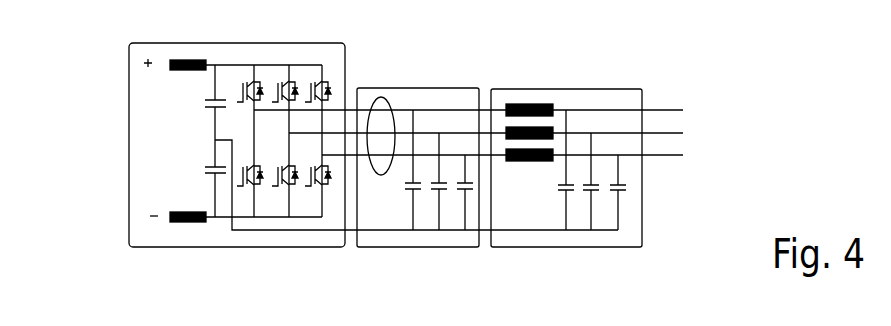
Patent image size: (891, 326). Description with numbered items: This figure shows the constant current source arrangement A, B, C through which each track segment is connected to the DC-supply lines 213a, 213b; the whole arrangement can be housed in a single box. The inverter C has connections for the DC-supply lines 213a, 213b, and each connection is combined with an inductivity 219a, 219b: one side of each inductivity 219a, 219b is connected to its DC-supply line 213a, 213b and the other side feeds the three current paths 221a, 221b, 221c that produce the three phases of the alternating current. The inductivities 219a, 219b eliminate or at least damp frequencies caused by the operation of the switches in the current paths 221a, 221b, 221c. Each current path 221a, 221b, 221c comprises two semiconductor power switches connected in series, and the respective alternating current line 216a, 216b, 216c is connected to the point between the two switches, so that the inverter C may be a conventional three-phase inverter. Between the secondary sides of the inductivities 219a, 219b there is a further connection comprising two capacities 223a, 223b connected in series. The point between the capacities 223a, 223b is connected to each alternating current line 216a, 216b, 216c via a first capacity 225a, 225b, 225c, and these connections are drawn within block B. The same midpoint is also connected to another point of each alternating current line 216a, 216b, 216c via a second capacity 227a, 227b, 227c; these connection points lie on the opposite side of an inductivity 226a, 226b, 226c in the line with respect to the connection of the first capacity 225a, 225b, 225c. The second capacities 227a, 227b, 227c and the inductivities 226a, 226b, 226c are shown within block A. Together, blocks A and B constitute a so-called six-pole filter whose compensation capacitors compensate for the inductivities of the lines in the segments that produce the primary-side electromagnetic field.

The inverter C is at (156, 43).
The block B is at (447, 84).
The block A is at (579, 85).
The DC-supply line 213a is at (165, 217).
The DC-supply line 213b is at (167, 65).
The inductivity 219a is at (178, 222).
The inductivity 219b is at (190, 60).
The capacity 223a is at (205, 168).
The capacity 223b is at (205, 103).
The current path 221a is at (255, 70).
The current path 221b is at (288, 205).
The current path 221c is at (323, 70).
The first capacity 225a is at (420, 190).
The first capacity 225b is at (443, 190).
The first capacity 225c is at (468, 190).
The inductivity 226a is at (527, 104).
The inductivity 226b is at (555, 130).
The inductivity 226c is at (530, 165).
The second capacity 227a is at (570, 190).
The second capacity 227b is at (596, 190).
The second capacity 227c is at (622, 190).
The alternating current line 216a is at (675, 112).
The alternating current line 216b is at (672, 133).
The alternating current line 216c is at (675, 156).